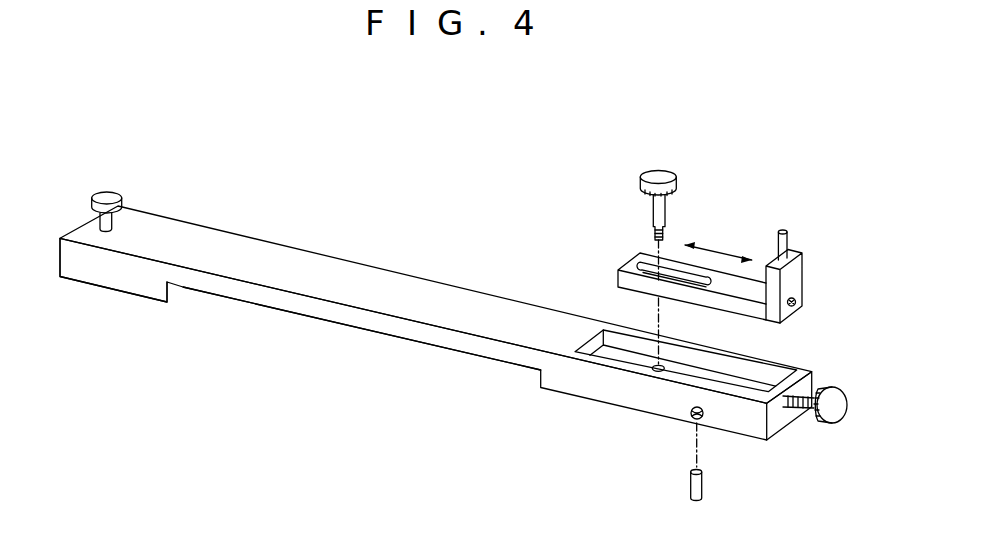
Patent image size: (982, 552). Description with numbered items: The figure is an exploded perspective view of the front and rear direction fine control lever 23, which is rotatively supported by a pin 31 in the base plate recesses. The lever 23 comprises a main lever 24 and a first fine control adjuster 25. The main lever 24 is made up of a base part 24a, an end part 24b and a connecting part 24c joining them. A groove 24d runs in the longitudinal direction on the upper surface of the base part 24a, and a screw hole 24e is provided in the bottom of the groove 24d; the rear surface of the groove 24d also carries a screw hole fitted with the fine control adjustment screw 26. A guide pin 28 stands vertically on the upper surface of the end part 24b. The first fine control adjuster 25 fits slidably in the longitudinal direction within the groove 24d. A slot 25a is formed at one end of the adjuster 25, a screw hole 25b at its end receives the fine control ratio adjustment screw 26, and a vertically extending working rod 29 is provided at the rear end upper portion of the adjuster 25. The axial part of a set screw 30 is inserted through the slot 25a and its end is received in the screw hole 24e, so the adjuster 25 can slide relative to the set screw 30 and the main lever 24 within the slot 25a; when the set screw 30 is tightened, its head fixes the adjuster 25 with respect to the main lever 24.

The front and rear direction fine control lever 23 is at (499, 198).
The main lever 24 is at (393, 272).
The base part 24a is at (645, 402).
The end part 24b is at (140, 287).
The connecting part 24c is at (352, 299).
The groove 24d is at (760, 377).
The screw hole 24e is at (633, 370).
The first fine control adjuster 25 is at (757, 274).
The slot 25a is at (673, 270).
The screw hole 25b is at (797, 301).
The fine control adjustment screw 26 is at (833, 418).
The guide pin 28 is at (109, 198).
The working rod 29 is at (788, 247).
The set screw 30 is at (657, 176).
The pin 31 is at (703, 488).